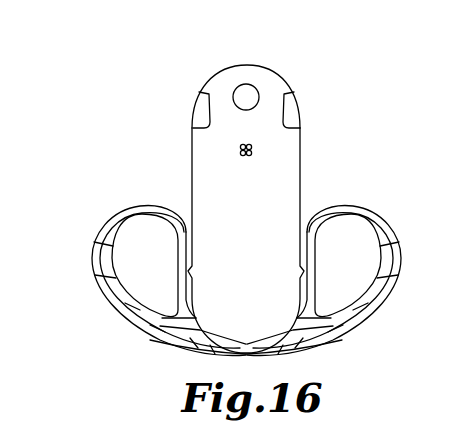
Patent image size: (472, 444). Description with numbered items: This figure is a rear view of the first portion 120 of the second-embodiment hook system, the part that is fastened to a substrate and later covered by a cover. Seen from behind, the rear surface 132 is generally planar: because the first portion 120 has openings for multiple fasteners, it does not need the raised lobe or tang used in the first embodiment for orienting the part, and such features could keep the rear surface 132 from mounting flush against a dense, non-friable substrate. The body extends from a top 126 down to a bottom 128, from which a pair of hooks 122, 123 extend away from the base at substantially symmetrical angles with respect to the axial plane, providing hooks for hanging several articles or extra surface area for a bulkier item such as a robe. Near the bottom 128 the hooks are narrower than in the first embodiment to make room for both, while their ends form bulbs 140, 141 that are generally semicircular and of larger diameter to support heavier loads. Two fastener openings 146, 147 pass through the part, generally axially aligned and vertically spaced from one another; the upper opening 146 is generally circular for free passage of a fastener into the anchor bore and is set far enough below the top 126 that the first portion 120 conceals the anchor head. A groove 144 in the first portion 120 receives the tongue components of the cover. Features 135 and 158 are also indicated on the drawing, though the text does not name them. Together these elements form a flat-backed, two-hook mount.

The first portion 120 is at (118, 103).
The hook 122 is at (355, 283).
The hook 123 is at (133, 285).
The top 126 is at (249, 64).
The bottom 128 is at (248, 356).
The rear surface 132 is at (280, 162).
The side edge 135 is at (302, 190).
The bulb 140 is at (122, 210).
The bulb 141 is at (375, 207).
The groove 144 is at (212, 190).
The upper opening 146 is at (238, 104).
The fastener opening 147 is at (255, 145).
The slot 158 is at (205, 96).